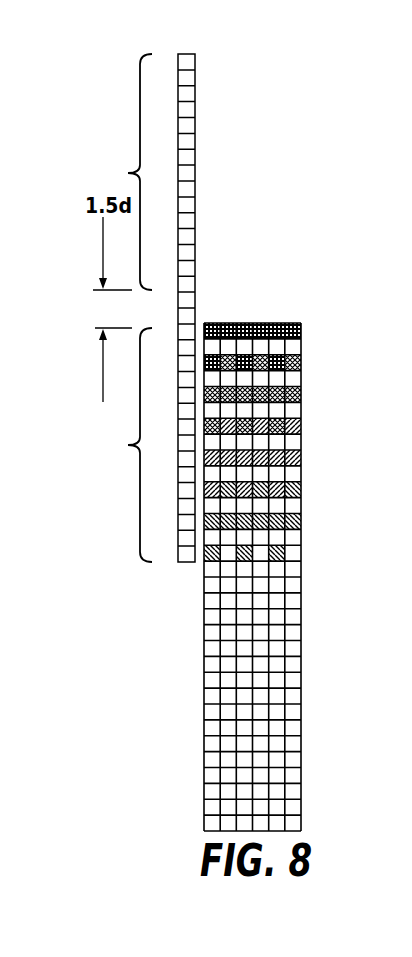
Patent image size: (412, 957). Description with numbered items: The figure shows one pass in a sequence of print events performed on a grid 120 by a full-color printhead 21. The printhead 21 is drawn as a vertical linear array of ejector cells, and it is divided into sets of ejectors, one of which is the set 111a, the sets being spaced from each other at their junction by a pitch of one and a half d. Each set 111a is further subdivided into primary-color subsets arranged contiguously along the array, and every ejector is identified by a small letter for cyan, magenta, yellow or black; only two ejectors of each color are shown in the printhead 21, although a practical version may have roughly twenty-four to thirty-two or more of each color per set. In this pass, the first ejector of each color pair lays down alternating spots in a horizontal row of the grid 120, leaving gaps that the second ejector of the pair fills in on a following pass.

The printhead 21 is at (195, 164).
The grid 120 is at (260, 323).
The set of ejectors 111a is at (124, 306).